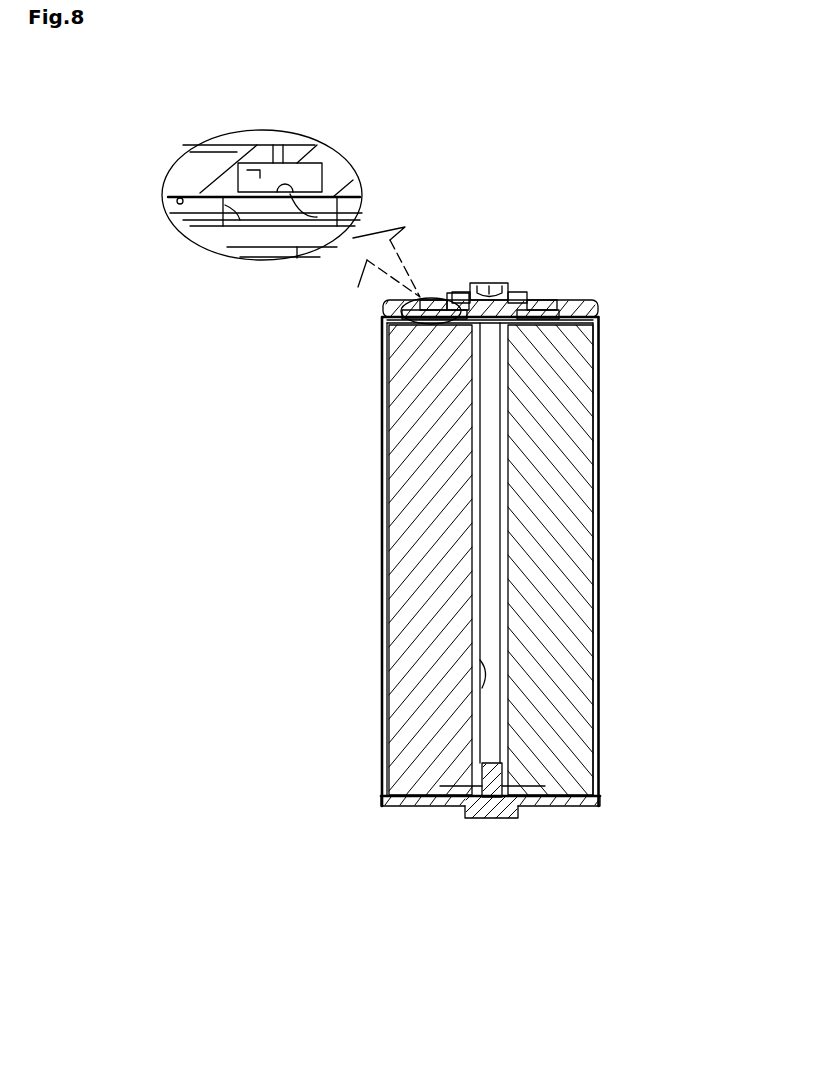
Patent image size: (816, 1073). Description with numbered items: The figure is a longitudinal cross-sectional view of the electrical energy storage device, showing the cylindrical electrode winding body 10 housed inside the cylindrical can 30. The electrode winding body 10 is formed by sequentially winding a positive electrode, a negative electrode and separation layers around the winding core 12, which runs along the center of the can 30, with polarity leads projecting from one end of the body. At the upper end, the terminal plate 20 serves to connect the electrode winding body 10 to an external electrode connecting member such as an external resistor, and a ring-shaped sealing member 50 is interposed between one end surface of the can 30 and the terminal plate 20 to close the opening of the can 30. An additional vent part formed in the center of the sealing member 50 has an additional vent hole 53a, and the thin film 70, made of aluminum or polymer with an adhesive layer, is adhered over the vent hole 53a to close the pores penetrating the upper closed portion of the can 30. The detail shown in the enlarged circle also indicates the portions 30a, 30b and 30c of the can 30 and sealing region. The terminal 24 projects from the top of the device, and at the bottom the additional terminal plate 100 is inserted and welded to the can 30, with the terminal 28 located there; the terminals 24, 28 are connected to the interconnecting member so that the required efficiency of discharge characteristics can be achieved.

The electrode winding body 10 is at (545, 567).
The winding core 12 is at (487, 672).
The terminal plate 20 is at (478, 369).
The terminal 24 is at (505, 284).
The terminal 28 is at (490, 820).
The cylindrical can 30 is at (630, 504).
The cap plate 30a is at (545, 300).
The terminal post 30b is at (283, 145).
The terminal hole 30c is at (250, 173).
The sealing member 50 is at (205, 222).
The additional vent hole 53a is at (207, 247).
The thin film 70 is at (337, 220).
The additional terminal plate 100 is at (410, 800).